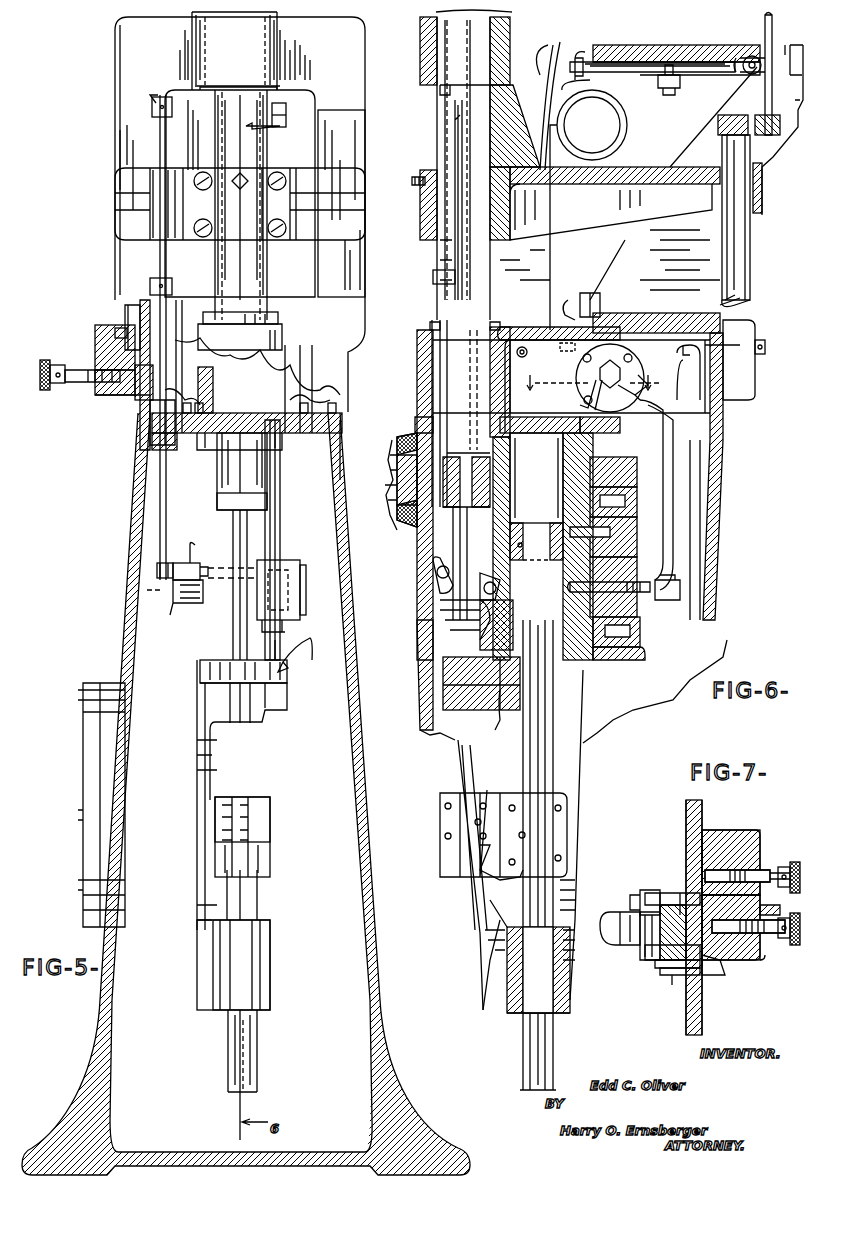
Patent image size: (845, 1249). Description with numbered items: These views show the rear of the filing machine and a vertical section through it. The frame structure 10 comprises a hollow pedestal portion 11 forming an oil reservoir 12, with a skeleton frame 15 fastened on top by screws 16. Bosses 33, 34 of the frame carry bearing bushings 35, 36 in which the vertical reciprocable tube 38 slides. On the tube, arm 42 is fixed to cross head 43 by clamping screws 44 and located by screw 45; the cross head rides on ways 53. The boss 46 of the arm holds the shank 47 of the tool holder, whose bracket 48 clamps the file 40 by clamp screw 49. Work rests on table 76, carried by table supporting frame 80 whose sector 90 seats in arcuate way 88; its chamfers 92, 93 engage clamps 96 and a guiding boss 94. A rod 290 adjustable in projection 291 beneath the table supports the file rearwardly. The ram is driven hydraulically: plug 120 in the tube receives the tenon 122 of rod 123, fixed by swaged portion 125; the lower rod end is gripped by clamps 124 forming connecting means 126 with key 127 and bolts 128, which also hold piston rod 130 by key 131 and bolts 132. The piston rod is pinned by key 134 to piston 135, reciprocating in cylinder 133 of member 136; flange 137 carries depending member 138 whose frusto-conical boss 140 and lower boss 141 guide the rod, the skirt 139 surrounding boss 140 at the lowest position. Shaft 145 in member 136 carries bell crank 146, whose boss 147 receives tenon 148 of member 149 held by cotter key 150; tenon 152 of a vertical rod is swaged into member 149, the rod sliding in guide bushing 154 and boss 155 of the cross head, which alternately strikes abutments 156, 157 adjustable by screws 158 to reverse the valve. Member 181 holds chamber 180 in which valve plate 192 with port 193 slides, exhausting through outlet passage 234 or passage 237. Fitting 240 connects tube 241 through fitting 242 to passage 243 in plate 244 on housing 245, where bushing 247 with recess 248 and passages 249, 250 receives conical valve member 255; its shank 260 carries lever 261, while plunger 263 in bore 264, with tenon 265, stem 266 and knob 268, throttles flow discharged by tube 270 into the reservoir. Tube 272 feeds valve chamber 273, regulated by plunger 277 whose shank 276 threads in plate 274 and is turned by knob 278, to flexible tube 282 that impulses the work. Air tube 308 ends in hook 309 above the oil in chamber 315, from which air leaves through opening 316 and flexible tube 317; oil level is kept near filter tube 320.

In FIG. 5, the frame structure 10 is at (103, 628).
In FIG. 5, the pedestal shaped portion 11 is at (373, 925).
In FIG. 6, the pedestal shaped portion 11 is at (720, 610).
In FIG. 5, the oil reservoir 12 is at (330, 782).
In FIG. 6, the oil reservoir 12 is at (436, 875).
In FIG. 5, the skeleton frame 15 is at (360, 375).
In FIG. 6, the skeleton frame 15 is at (735, 402).
In FIG. 5, the screws 16 is at (340, 413).
In FIG. 5, the boss 33 is at (270, 345).
In FIG. 6, the boss 33 is at (417, 345).
In FIG. 5, the boss 34 is at (200, 60).
In FIG. 6, the boss 34 is at (420, 52).
In FIG. 6, the bearing bushing 35 is at (440, 385).
In FIG. 5, the bearing bushing 36 is at (240, 191).
In FIG. 6, the bearing bushing 36 is at (432, 78).
In FIG. 5, the vertical reciprocable tube 38 is at (266, 258).
In FIG. 6, the vertical reciprocable tube 38 is at (455, 259).
In FIG. 6, the cutting file 40 is at (765, 32).
In FIG. 6, the arm 42 is at (670, 195).
In FIG. 5, the cross head 43 is at (185, 242).
In FIG. 6, the cross head 43 is at (425, 218).
In FIG. 5, the clamping screws 44 is at (203, 172).
In FIG. 5, the screw 45 is at (238, 172).
In FIG. 6, the screw 45 is at (412, 181).
In FIG. 6, the boss portion 46 is at (762, 200).
In FIG. 6, the shank 47 is at (752, 250).
In FIG. 6, the tool securing bracket 48 is at (722, 130).
In FIG. 6, the clamp screw 49 is at (760, 120).
In FIG. 5, the ways 53 is at (118, 140).
In FIG. 6, the ways 53 is at (461, 126).
In FIG. 6, the work supporting table 76 is at (640, 47).
In FIG. 6, the table supporting frame 80 is at (775, 155).
In FIG. 6, the arcuate way 88 is at (725, 320).
In FIG. 6, the sector shaped portion 90 is at (618, 280).
In FIG. 6, the chamfer 92 is at (740, 295).
In FIG. 6, the chamfer 93 is at (592, 293).
In FIG. 6, the boss 94 is at (570, 312).
In FIG. 6, the clamps 96 is at (765, 360).
In FIG. 6, the plug 120 is at (415, 520).
In FIG. 6, the tenon 122 is at (412, 478).
In FIG. 6, the rod 123 is at (440, 585).
In FIG. 6, the clamps 124 is at (440, 822).
In FIG. 6, the swaged portion 125 is at (417, 425).
In FIG. 6, the connecting means 126 is at (450, 878).
In FIG. 6, the drift pin 127 is at (478, 820).
In FIG. 6, the clamping bolts 128 is at (445, 805).
In FIG. 5, the piston rod 130 is at (266, 898).
In FIG. 6, the piston rod 130 is at (555, 765).
In FIG. 6, the drift pin 131 is at (527, 835).
In FIG. 6, the clamping bolts 132 is at (562, 808).
In FIG. 6, the cylinder 133 is at (595, 395).
In FIG. 6, the drift pin 134 is at (523, 545).
In FIG. 6, the piston 135 is at (543, 546).
In FIG. 5, the member 136 is at (205, 662).
In FIG. 6, the member 136 is at (480, 633).
In FIG. 5, the flange 137 is at (205, 683).
In FIG. 6, the flange 137 is at (443, 680).
In FIG. 5, the depending member 138 is at (200, 812).
In FIG. 6, the depending member 138 is at (500, 895).
In FIG. 6, the skirt portion 139 is at (480, 612).
In FIG. 6, the frusto-conical boss 140 is at (500, 720).
In FIG. 5, the boss portion 141 is at (270, 968).
In FIG. 6, the boss portion 141 is at (507, 970).
In FIG. 5, the shaft 145 is at (205, 635).
In FIG. 5, the bell crank 146 is at (185, 620).
In FIG. 5, the boss 147 is at (185, 563).
In FIG. 5, the cylindrical tenon 148 is at (215, 567).
In FIG. 5, the rectangularly shaped member 149 is at (157, 592).
In FIG. 5, the cotter key 150 is at (200, 563).
In FIG. 5, the tenon 152 is at (160, 595).
In FIG. 5, the guide bushing 154 is at (150, 440).
In FIG. 5, the boss 155 is at (150, 218).
In FIG. 5, the abutment 156 is at (172, 290).
In FIG. 5, the abutment 157 is at (150, 113).
In FIG. 5, the screws 158 is at (150, 106).
In FIG. 6, the rectangular chamber 180 is at (640, 622).
In FIG. 6, the member 181 is at (634, 657).
In FIG. 6, the valve plate 192 is at (637, 530).
In FIG. 6, the port 193 is at (637, 487).
In FIG. 6, the outlet passage 234 is at (637, 500).
In FIG. 6, the passage 237 is at (650, 585).
In FIG. 6, the fitting 240 is at (680, 585).
In FIG. 6, the tube 241 is at (673, 470).
In FIG. 6, the second fitting 242 is at (640, 398).
In FIG. 7, the second fitting 242 is at (595, 935).
In FIG. 7, the passage 243 is at (630, 950).
In FIG. 7, the plate 244 is at (650, 960).
In FIG. 7, the housing 245 is at (660, 965).
In FIG. 7, the annular member 247 is at (668, 972).
In FIG. 7, the peripheral recess 248 is at (712, 975).
In FIG. 7, the passage 249 is at (680, 900).
In FIG. 7, the passage 250 is at (750, 960).
In FIG. 7, the conically shaped valve member 255 is at (672, 985).
In FIG. 7, the shank 260 is at (755, 960).
In FIG. 7, the manipulating arm 261 is at (760, 958).
In FIG. 7, the supplemental valve plunger 263 is at (660, 890).
In FIG. 7, the bore 264 is at (630, 898).
In FIG. 7, the tenon portion 265 is at (760, 910).
In FIG. 7, the stem 266 is at (749, 920).
In FIG. 7, the manipulating knob 268 is at (800, 928).
In FIG. 6, the fluid discharge tube 270 is at (700, 420).
In FIG. 5, the tube 272 is at (312, 662).
In FIG. 6, the tube 272 is at (480, 400).
In FIG. 5, the valve chamber 273 is at (138, 400).
In FIG. 7, the valve chamber 273 is at (712, 845).
In FIG. 5, the plate 274 is at (113, 328).
In FIG. 7, the plate 274 is at (742, 845).
In FIG. 5, the threaded shank 276 is at (98, 398).
In FIG. 7, the threaded shank 276 is at (755, 872).
In FIG. 5, the valve plunger 277 is at (110, 365).
In FIG. 7, the valve plunger 277 is at (750, 865).
In FIG. 5, the manipulating knob 278 is at (45, 360).
In FIG. 7, the manipulating knob 278 is at (795, 860).
In FIG. 5, the tube 282 is at (125, 310).
In FIG. 6, the tube 282 is at (588, 205).
In FIG. 6, the rod 290 is at (595, 60).
In FIG. 6, the projection 291 is at (665, 95).
In FIG. 6, the tube 308 is at (700, 640).
In FIG. 6, the inverted hook-like extremity 309 is at (752, 330).
In FIG. 6, the chamber 315 is at (745, 382).
In FIG. 6, the opening 316 is at (520, 345).
In FIG. 6, the tube 317 is at (543, 99).
In FIG. 6, the oil filter tube 320 is at (400, 495).